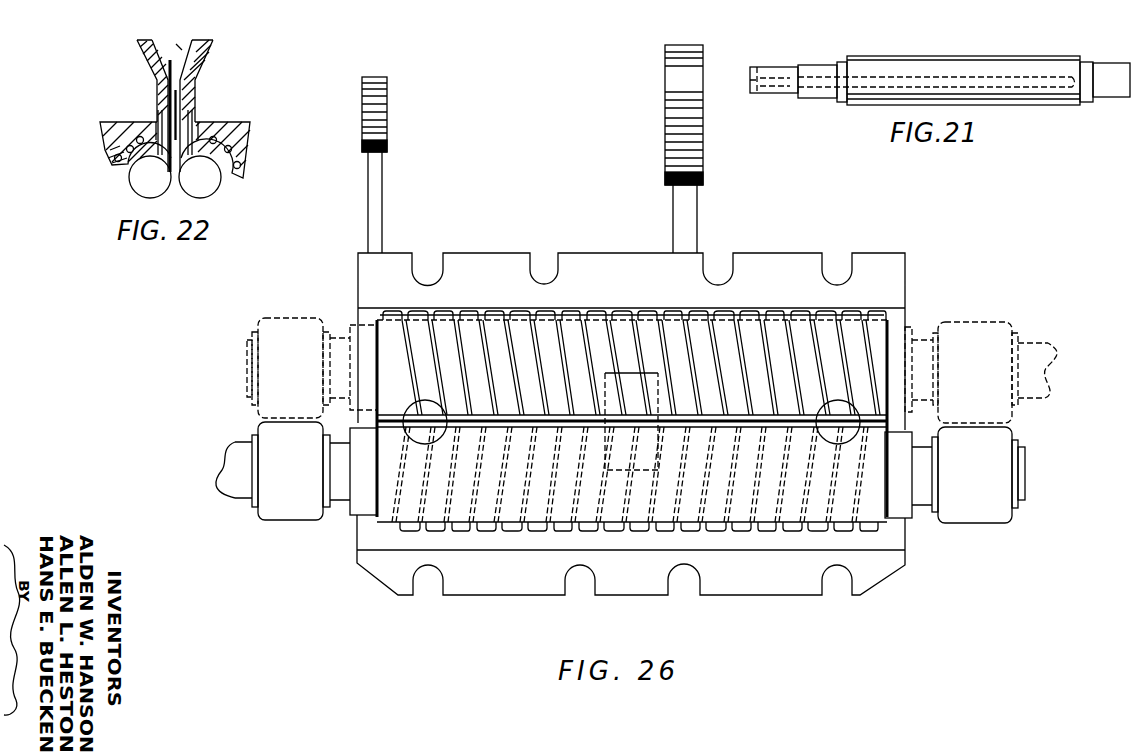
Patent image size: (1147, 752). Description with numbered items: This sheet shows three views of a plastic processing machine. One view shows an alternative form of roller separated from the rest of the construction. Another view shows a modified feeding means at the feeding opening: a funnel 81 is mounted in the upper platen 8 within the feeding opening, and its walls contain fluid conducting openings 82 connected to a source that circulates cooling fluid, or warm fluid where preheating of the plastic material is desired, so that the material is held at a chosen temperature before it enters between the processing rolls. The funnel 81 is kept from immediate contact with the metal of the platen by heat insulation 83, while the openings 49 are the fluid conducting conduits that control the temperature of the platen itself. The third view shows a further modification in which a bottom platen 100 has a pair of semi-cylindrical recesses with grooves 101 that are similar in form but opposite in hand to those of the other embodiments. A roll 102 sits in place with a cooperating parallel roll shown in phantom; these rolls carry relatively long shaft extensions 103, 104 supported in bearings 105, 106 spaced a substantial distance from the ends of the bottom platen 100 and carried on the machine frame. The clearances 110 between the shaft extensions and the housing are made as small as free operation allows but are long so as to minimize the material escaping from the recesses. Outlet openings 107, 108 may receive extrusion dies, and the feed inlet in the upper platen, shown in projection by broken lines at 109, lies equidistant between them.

In FIG. 22, the upper platen 8 is at (236, 121).
In FIG. 22, the openings 49 is at (104, 150).
In FIG. 22, the funnel 81 is at (203, 53).
In FIG. 22, the fluid conducting openings 82 is at (187, 108).
In FIG. 22, the heat insulation 83 is at (192, 124).
In FIG. 26, the bottom platen 100 is at (463, 263).
In FIG. 26, the grooves 101 is at (450, 317).
In FIG. 26, the roll 102 is at (560, 530).
In FIG. 26, the shaft extension 103 is at (342, 487).
In FIG. 26, the shaft extension 104 is at (917, 495).
In FIG. 26, the bearing 105 is at (273, 437).
In FIG. 26, the bearing 106 is at (975, 495).
In FIG. 26, the outlet opening 107 is at (413, 410).
In FIG. 26, the outlet opening 108 is at (848, 410).
In FIG. 26, the feed inlet 109 is at (647, 460).
In FIG. 26, the clearances 110 is at (362, 518).